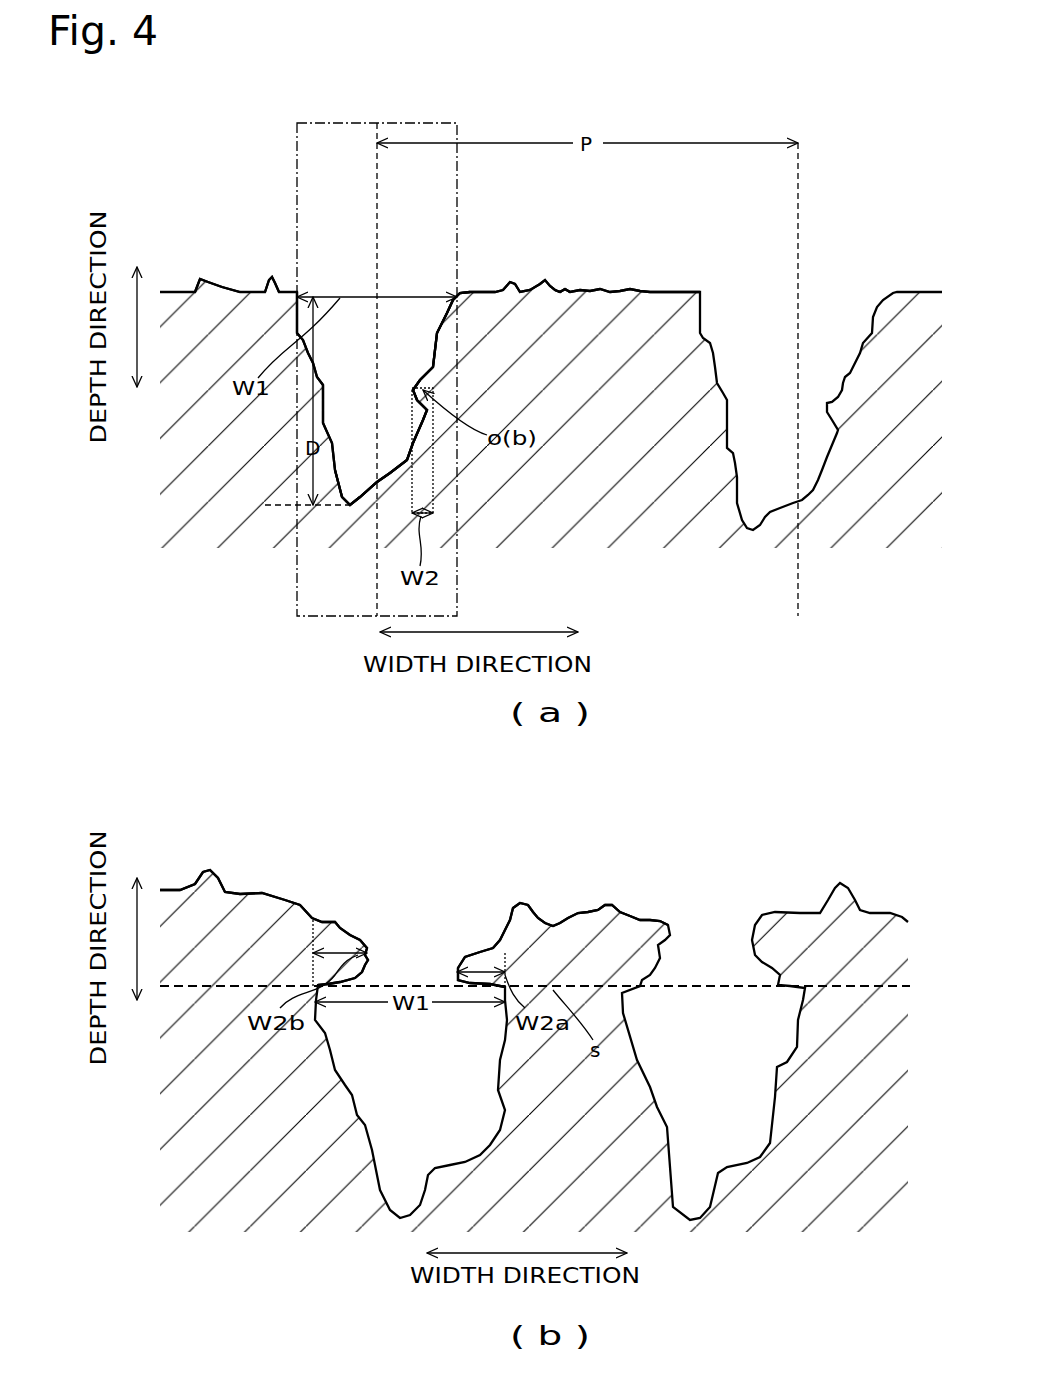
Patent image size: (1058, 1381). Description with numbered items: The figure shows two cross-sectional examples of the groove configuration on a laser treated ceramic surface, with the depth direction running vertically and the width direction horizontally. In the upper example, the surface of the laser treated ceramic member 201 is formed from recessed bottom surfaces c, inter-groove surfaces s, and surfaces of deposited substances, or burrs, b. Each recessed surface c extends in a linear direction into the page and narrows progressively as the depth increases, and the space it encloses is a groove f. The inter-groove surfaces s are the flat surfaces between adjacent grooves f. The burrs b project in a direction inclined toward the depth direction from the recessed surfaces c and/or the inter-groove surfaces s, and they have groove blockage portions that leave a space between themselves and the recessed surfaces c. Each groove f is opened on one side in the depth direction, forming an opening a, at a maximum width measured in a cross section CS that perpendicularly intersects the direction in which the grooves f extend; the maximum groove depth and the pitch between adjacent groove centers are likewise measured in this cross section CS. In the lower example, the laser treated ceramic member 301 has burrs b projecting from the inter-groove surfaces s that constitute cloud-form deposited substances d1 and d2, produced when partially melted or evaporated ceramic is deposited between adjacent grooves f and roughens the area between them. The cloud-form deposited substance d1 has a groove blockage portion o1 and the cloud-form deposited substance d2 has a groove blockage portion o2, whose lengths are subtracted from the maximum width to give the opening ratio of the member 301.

The laser treated ceramic member 201 is at (856, 215).
The laser treated ceramic member 301 is at (785, 860).
The opening a is at (345, 290).
The deposited substance (burr) b is at (270, 283).
The inter-groove surface s is at (488, 292).
The groove f is at (392, 362).
The recessed surface (bottom surface) c is at (383, 480).
The cross section CS is at (297, 552).
The groove blockage portion o1 is at (460, 950).
The groove blockage portion o2 is at (355, 925).
The cloud-form deposited substance d1 is at (575, 900).
The cloud-form deposited substance d2 is at (255, 885).